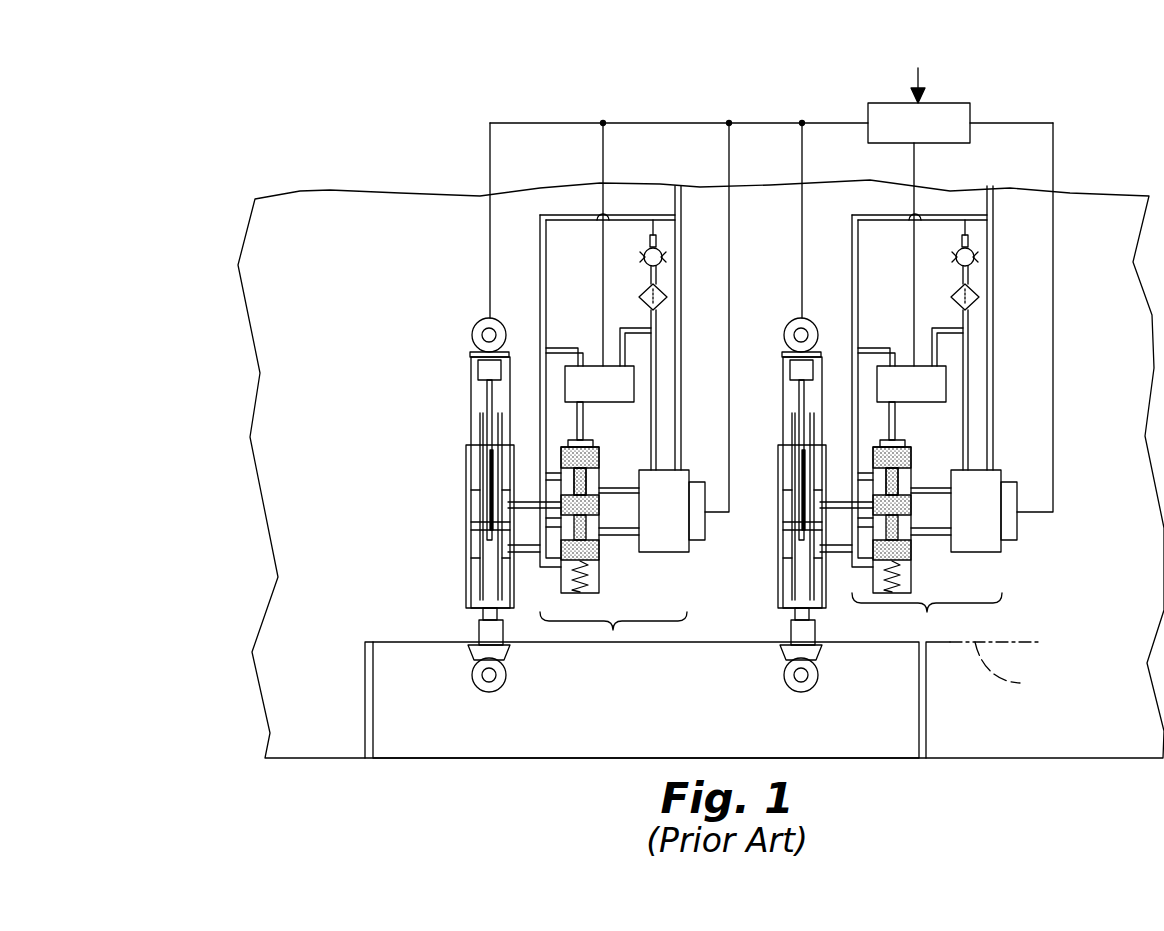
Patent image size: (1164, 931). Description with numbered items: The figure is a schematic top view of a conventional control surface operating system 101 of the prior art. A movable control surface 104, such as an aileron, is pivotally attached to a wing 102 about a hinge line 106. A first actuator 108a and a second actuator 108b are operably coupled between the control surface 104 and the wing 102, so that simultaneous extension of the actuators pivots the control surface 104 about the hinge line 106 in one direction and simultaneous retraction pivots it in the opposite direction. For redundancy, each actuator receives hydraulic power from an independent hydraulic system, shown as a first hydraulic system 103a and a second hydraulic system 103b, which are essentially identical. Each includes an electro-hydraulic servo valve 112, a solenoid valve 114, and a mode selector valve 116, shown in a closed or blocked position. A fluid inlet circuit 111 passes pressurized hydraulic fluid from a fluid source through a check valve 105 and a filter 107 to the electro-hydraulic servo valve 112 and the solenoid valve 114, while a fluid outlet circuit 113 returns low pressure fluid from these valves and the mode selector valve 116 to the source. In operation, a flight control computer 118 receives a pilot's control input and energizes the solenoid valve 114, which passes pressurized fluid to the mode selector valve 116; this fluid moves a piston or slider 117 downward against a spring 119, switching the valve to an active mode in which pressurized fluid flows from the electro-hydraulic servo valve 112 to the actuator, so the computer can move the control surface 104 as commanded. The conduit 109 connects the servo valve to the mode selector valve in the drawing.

The control surface operating system 101 is at (328, 222).
The wing 102 is at (1070, 760).
The first hydraulic system 103a is at (613, 630).
The second hydraulic system 103b is at (927, 605).
The control surface 104 is at (843, 760).
The check valve 105 is at (648, 246).
The hinge line 106 is at (1017, 669).
The filter 107 is at (667, 299).
The first actuator 108a is at (470, 408).
The second actuator 108b is at (783, 370).
The supply conduit 109 is at (651, 436).
The fluid inlet circuit 111 is at (624, 325).
The electro-hydraulic servo valve 112 is at (690, 471).
The fluid outlet circuit 113 is at (683, 240).
The solenoid valve 114 is at (636, 383).
The mode selector valve 116 is at (600, 563).
The piston or slider 117 is at (588, 478).
The flight control computer 118 is at (950, 103).
The spring 119 is at (592, 580).